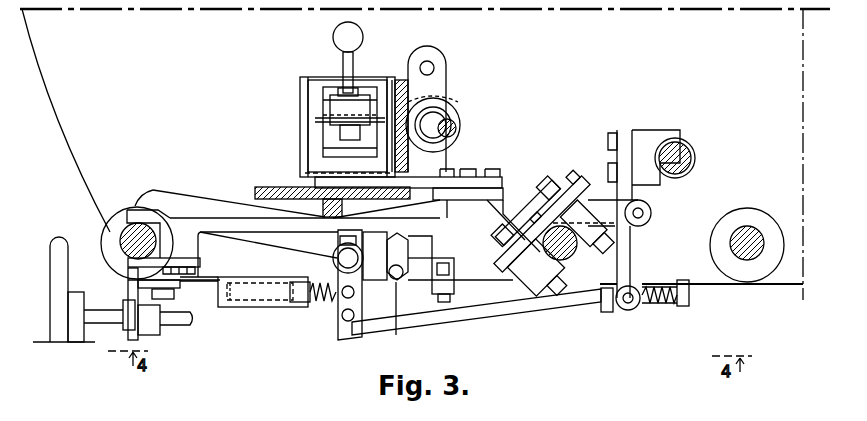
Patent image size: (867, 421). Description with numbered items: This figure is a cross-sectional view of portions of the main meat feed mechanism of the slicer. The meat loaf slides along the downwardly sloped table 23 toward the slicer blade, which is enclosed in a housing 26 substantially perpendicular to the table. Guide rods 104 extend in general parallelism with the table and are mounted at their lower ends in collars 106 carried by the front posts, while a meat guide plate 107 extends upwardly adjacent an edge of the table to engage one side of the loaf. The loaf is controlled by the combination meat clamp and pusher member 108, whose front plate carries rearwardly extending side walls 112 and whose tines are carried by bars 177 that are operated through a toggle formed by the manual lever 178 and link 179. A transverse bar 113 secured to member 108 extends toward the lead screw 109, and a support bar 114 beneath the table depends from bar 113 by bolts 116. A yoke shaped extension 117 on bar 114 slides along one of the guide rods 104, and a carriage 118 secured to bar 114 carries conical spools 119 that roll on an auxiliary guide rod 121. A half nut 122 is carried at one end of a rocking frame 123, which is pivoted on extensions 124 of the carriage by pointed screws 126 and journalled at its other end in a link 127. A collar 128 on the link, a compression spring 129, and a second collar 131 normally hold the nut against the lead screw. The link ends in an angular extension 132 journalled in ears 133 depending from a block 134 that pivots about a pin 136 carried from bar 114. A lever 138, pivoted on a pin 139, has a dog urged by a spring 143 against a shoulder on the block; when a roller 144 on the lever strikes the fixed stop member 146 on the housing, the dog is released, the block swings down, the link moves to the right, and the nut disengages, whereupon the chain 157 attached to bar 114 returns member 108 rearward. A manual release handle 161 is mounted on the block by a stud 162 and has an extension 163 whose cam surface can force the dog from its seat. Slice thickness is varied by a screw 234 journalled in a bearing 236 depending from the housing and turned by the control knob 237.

The table 23 is at (276, 189).
The housing 26 is at (72, 160).
The guide rods 104 is at (122, 212).
The collars 106 is at (108, 225).
The meat guide plate 107 is at (398, 85).
The combination meat clamp and pusher member 108 is at (300, 83).
The lead screw 109 is at (685, 161).
The side walls 112 is at (300, 105).
The transverse bar 113 is at (472, 180).
The support bar 114 is at (200, 212).
The bolts 116 is at (446, 168).
The yoke shaped extension 117 is at (145, 210).
The carriage 118 is at (554, 177).
The spools 119 is at (522, 272).
The auxiliary guide rod 121 is at (580, 240).
The half nut 122 is at (645, 135).
The rocking frame 123 is at (632, 255).
The extensions 124 is at (600, 198).
The pointed screws 126 is at (643, 212).
The link 127 is at (470, 313).
The collar 128 is at (686, 306).
The compression spring 129 is at (662, 304).
The second collar 131 is at (607, 312).
The angularly disposed extension 132 is at (348, 338).
The ears 133 is at (342, 318).
The block 134 is at (330, 293).
The pin 136 is at (326, 302).
The lever 138 is at (372, 280).
The pin 139 is at (382, 316).
The spring 143 is at (333, 247).
The roller 144 is at (450, 272).
The stop member 146 is at (440, 266).
The chain 157 is at (409, 270).
The handle 161 is at (230, 282).
The stud 162 is at (272, 290).
The extension 163 is at (318, 272).
The bars 177 is at (318, 80).
The lever 178 is at (342, 33).
The link 179 is at (330, 133).
The screw 234 is at (172, 320).
The bearing 236 is at (80, 305).
The control knob 237 is at (55, 250).